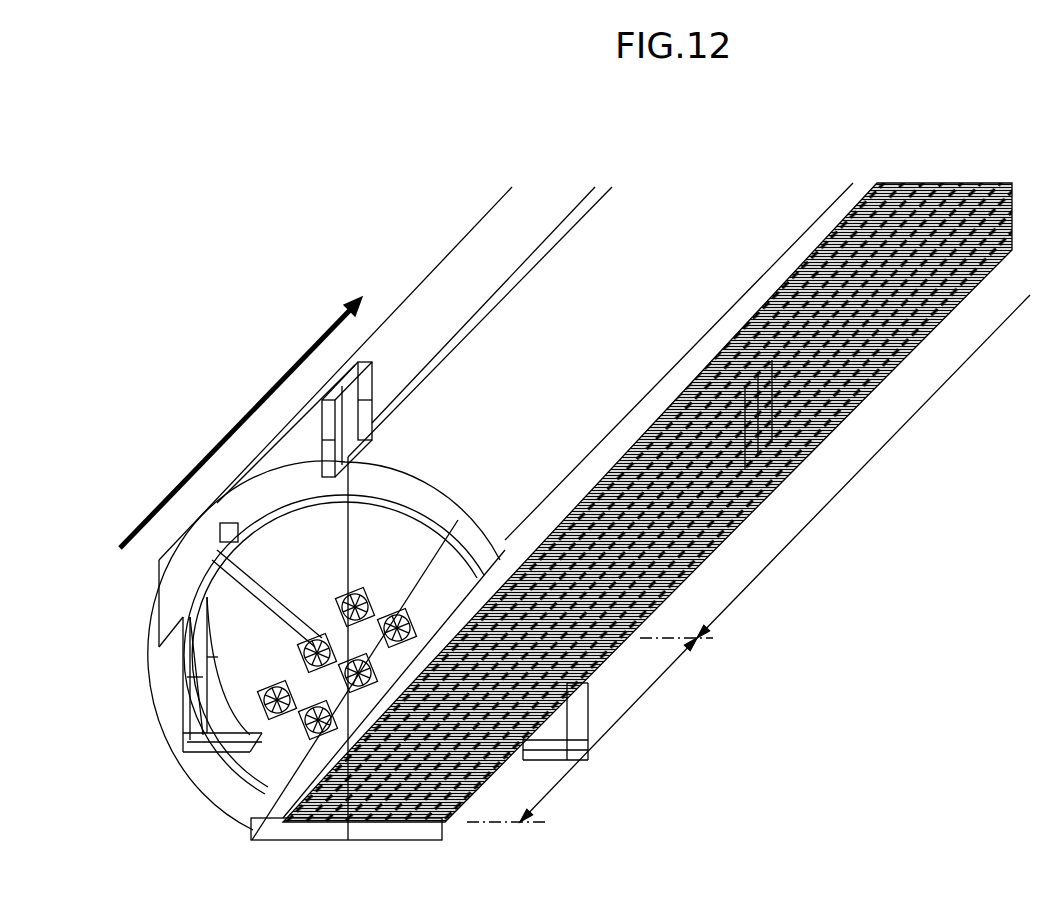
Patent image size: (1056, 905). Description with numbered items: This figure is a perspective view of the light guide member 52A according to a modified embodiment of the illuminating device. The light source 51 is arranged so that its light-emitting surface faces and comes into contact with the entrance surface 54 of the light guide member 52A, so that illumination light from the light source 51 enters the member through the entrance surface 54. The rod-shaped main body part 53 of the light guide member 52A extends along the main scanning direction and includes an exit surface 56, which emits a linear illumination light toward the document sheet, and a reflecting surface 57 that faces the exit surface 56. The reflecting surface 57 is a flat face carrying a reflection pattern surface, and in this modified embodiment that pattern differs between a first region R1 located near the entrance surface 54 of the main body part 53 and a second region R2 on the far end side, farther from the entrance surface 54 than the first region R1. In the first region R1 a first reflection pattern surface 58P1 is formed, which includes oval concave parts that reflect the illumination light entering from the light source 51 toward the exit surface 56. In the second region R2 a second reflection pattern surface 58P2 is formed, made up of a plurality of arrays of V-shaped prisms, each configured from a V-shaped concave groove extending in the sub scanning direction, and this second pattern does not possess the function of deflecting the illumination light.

The light source 51 is at (258, 780).
The light guide member 52A is at (553, 176).
The main body part 53 is at (214, 389).
The entrance surface 54 is at (440, 482).
The exit surface 56 is at (712, 205).
The reflecting surface 57 is at (457, 833).
The first reflection pattern surface 58P1 is at (500, 785).
The second reflection pattern surface 58P2 is at (753, 523).
The first region R1 is at (582, 730).
The second region R2 is at (835, 466).